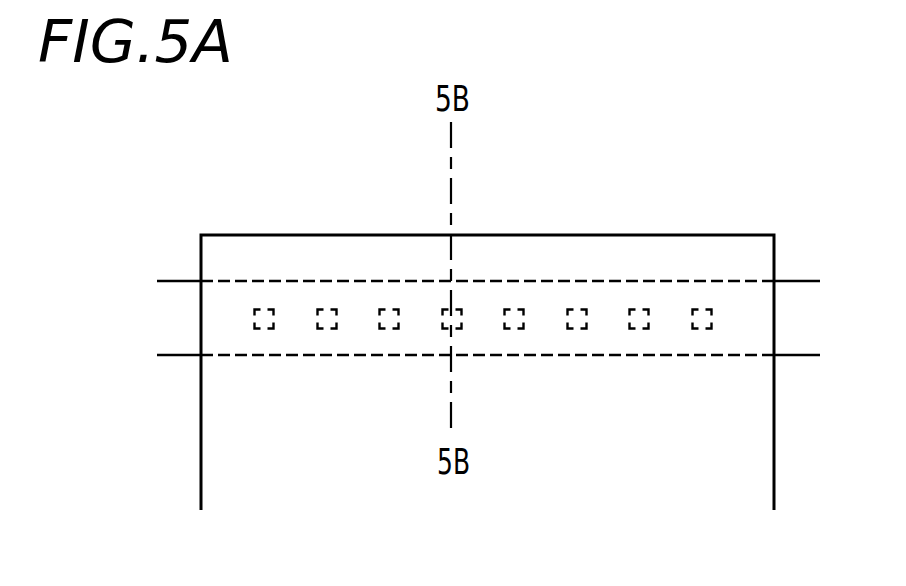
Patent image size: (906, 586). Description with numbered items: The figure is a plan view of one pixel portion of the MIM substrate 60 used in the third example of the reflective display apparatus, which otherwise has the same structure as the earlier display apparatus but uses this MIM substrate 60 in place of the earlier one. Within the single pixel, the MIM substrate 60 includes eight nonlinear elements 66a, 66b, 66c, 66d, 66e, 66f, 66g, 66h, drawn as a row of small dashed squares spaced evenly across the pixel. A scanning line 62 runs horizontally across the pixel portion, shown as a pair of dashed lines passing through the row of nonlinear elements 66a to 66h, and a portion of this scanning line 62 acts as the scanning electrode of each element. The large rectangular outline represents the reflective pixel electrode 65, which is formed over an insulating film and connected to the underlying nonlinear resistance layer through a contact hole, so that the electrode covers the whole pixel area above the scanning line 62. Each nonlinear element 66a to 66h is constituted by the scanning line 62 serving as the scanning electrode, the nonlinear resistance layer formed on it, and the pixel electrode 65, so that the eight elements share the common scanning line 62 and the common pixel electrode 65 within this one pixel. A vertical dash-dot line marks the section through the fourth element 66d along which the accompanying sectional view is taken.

The MIM substrate 60 is at (543, 102).
The scanning line 62 is at (173, 300).
The pixel electrode 65 is at (582, 235).
The nonlinear element 66a is at (251, 269).
The nonlinear element 66b is at (314, 270).
The nonlinear element 66c is at (386, 268).
The nonlinear element 66d is at (462, 267).
The nonlinear element 66e is at (510, 266).
The nonlinear element 66f is at (584, 266).
The nonlinear element 66g is at (645, 267).
The nonlinear element 66h is at (715, 267).